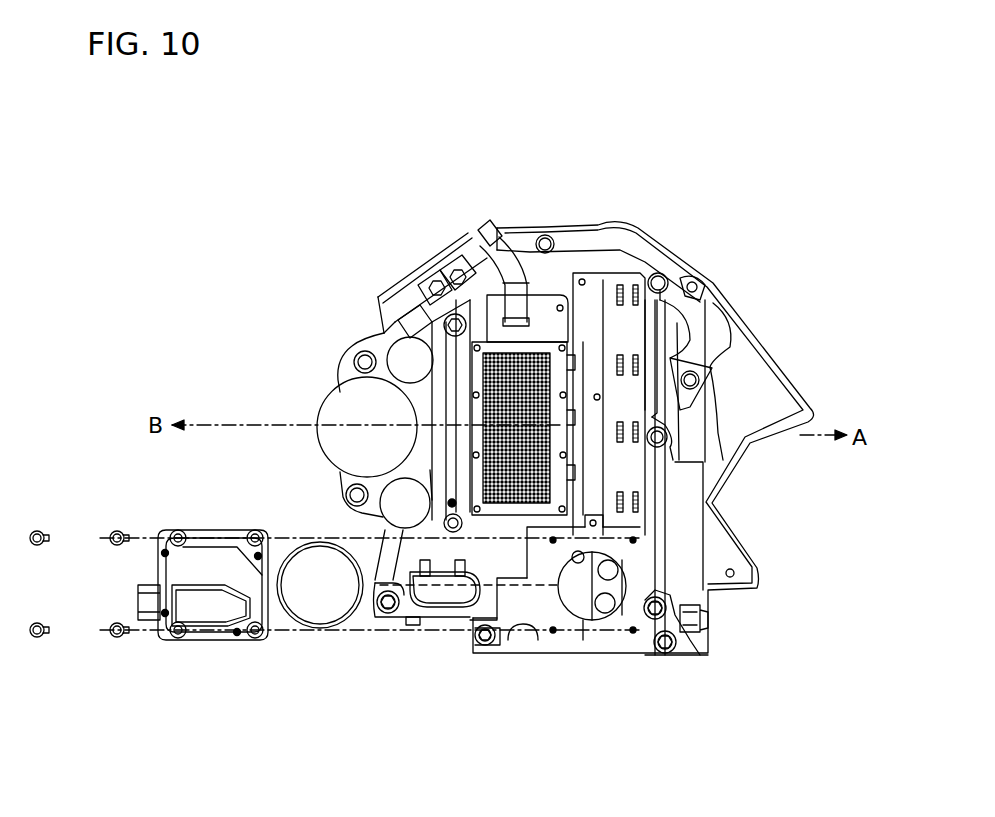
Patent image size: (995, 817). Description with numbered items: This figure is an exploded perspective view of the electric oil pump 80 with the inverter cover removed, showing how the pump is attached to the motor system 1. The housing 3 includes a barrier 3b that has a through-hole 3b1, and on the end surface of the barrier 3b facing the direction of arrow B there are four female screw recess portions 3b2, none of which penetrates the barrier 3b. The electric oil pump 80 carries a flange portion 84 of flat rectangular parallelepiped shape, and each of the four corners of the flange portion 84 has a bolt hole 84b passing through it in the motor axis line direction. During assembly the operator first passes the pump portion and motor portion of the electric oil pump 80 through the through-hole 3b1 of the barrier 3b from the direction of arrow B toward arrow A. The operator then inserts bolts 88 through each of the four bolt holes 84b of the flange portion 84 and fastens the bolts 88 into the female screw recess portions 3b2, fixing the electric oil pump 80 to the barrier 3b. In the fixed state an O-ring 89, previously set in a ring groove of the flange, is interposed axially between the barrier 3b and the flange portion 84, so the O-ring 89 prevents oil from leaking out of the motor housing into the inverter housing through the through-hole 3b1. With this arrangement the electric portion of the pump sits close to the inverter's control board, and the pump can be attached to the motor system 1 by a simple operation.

The motor system 1 is at (653, 201).
The housing 3 is at (597, 229).
The barrier 3b is at (567, 642).
The through-hole 3b1 is at (585, 612).
The female screw recess portions 3b2 is at (556, 538).
The electric oil pump 80 is at (228, 500).
The flange portion 84 is at (266, 640).
The bolt holes 84b is at (177, 536).
The bolts 88 is at (110, 533).
The O-ring 89 is at (347, 628).